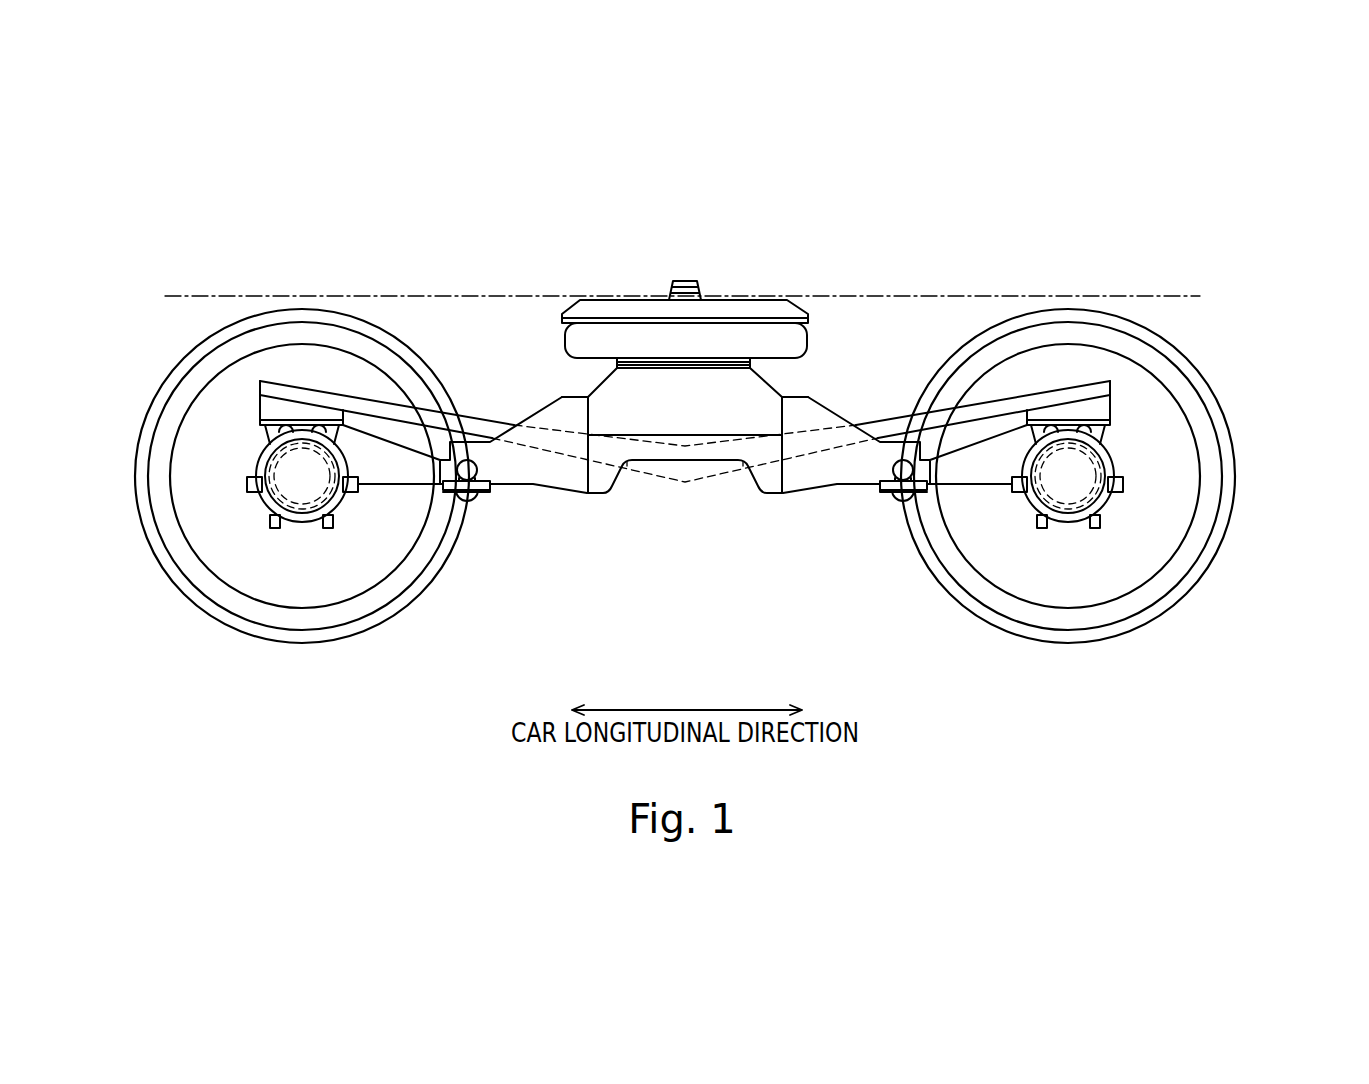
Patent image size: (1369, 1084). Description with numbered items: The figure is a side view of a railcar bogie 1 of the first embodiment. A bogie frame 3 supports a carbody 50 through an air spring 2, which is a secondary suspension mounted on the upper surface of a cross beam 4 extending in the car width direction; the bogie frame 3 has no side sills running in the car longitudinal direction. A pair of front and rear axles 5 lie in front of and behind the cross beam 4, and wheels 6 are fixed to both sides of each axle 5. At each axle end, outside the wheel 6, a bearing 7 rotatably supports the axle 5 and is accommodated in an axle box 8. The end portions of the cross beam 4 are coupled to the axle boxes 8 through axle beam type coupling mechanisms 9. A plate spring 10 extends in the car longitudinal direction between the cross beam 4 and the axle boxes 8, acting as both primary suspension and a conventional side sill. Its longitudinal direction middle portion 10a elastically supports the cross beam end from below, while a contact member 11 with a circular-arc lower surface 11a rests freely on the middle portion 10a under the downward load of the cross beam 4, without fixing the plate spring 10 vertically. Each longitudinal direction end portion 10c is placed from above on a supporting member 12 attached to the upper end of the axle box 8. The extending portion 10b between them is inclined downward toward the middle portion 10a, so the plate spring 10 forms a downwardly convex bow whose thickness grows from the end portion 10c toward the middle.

The railcar bogie 1 is at (193, 314).
The air spring 2 is at (767, 304).
The bogie frame 3 is at (790, 385).
The cross beam 4 is at (603, 380).
The axle 5 is at (260, 503).
The wheel 6 is at (183, 353).
The bearing 7 is at (302, 512).
The axle box 8 is at (245, 480).
The axle beam type coupling mechanism 9 is at (481, 513).
The plate spring 10 is at (883, 402).
The longitudinal direction middle portion 10a is at (688, 484).
The extending portion 10b is at (466, 458).
The longitudinal direction end portion 10c is at (298, 384).
The contact member 11 is at (704, 433).
The circular-arc lower surface 11a is at (662, 446).
The supporting member 12 is at (258, 407).
The carbody 50 is at (1178, 303).